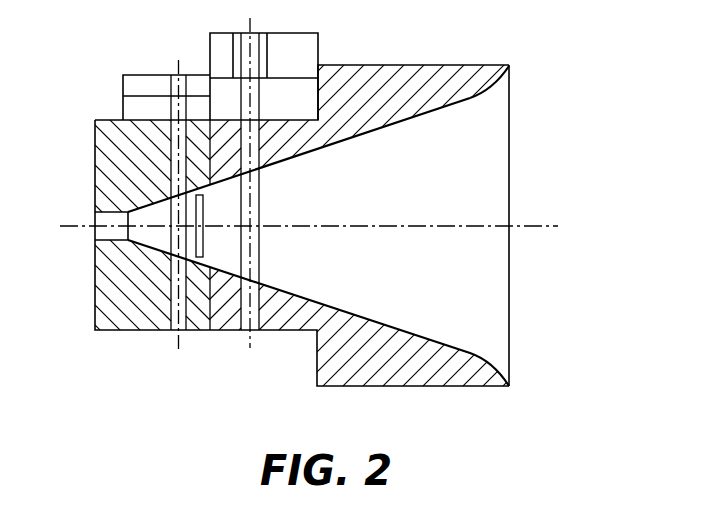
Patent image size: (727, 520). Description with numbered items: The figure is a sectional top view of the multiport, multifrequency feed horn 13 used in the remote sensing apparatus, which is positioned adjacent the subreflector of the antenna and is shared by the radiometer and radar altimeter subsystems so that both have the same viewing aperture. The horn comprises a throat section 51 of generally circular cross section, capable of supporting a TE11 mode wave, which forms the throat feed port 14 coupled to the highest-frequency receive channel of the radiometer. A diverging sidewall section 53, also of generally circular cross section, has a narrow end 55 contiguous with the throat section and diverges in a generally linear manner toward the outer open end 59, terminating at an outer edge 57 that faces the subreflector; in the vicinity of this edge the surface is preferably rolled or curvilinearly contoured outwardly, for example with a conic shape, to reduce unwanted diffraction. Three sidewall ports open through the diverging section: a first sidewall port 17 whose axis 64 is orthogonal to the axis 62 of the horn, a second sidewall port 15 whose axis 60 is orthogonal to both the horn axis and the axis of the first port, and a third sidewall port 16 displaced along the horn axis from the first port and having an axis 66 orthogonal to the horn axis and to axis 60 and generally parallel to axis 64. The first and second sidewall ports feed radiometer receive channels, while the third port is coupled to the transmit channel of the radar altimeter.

The multiport, multifrequency feed horn 13 is at (509, 320).
The throat feed port 14 is at (98, 232).
The second sidewall port 15 is at (210, 213).
The third sidewall port 16 is at (243, 40).
The first sidewall port 17 is at (177, 70).
The throat section 51 is at (95, 212).
The diverging sidewall section 53 is at (421, 291).
The narrow end 55 is at (123, 192).
The outer edge 57 is at (511, 66).
The outer open end 59 is at (511, 123).
The axis of sidewall port 60 is at (210, 237).
The axis of the horn 62 is at (538, 226).
The axis of sidewall port 17 64 is at (178, 333).
The axis of port 16 66 is at (253, 188).